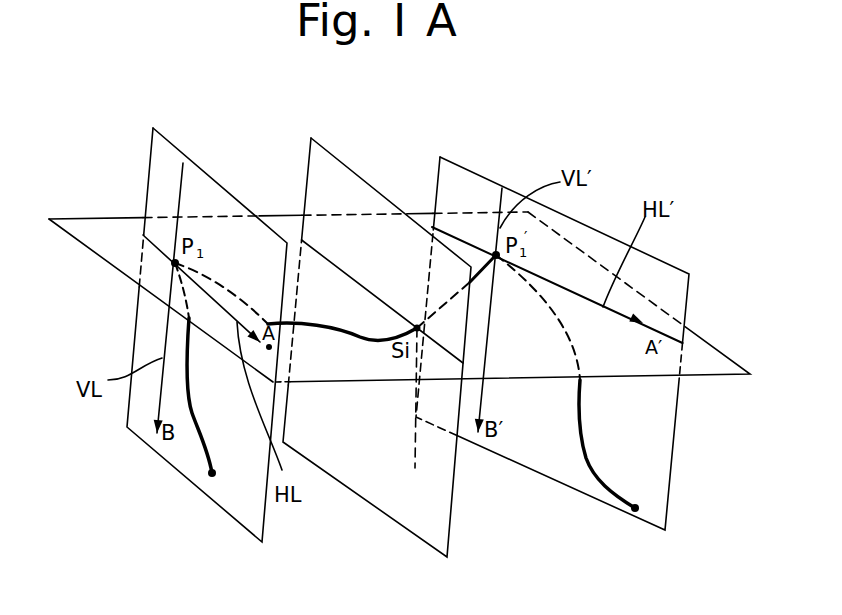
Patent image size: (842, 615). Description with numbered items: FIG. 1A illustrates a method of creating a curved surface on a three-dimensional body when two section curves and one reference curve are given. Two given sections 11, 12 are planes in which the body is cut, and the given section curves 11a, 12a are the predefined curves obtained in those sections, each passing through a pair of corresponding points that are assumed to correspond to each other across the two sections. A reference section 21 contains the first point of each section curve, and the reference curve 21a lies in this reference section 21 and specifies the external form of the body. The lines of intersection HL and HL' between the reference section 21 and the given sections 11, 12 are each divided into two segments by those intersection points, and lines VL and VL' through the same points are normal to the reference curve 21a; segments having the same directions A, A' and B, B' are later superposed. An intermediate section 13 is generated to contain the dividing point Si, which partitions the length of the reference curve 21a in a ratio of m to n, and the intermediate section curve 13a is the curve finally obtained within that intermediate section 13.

The given section 11 is at (178, 453).
The given section curve 11a is at (205, 453).
The given section 12 is at (675, 282).
The given section curve 12a is at (588, 477).
The intermediate section 13 is at (337, 168).
The intermediate section curve 13a is at (415, 447).
The reference section 21 is at (90, 225).
The reference curve 21a is at (318, 322).